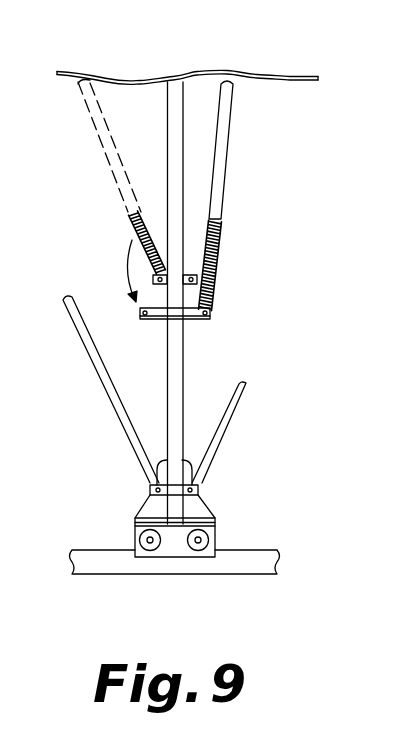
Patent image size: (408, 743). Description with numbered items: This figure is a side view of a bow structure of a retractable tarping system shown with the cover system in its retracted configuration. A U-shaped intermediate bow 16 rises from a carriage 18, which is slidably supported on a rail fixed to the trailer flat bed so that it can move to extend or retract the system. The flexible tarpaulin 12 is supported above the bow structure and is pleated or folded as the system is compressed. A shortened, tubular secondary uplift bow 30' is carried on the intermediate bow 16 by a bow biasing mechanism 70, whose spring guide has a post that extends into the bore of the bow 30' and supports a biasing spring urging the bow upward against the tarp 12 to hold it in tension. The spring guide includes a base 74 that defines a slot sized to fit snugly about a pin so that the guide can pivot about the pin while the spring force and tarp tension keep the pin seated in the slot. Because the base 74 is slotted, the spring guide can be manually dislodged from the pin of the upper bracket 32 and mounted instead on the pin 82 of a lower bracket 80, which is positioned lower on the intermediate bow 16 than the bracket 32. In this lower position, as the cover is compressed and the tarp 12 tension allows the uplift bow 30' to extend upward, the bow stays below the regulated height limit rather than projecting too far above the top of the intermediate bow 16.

The tarpaulin 12 is at (257, 73).
The intermediate bow 16 is at (166, 395).
The carriage 18 is at (200, 508).
The secondary uplift bow 30' is at (249, 150).
The bracket 32 is at (186, 274).
The bow biasing mechanism 70 is at (232, 257).
The base 74 is at (215, 309).
The lower bracket 80 is at (156, 320).
The pin 82 is at (140, 316).